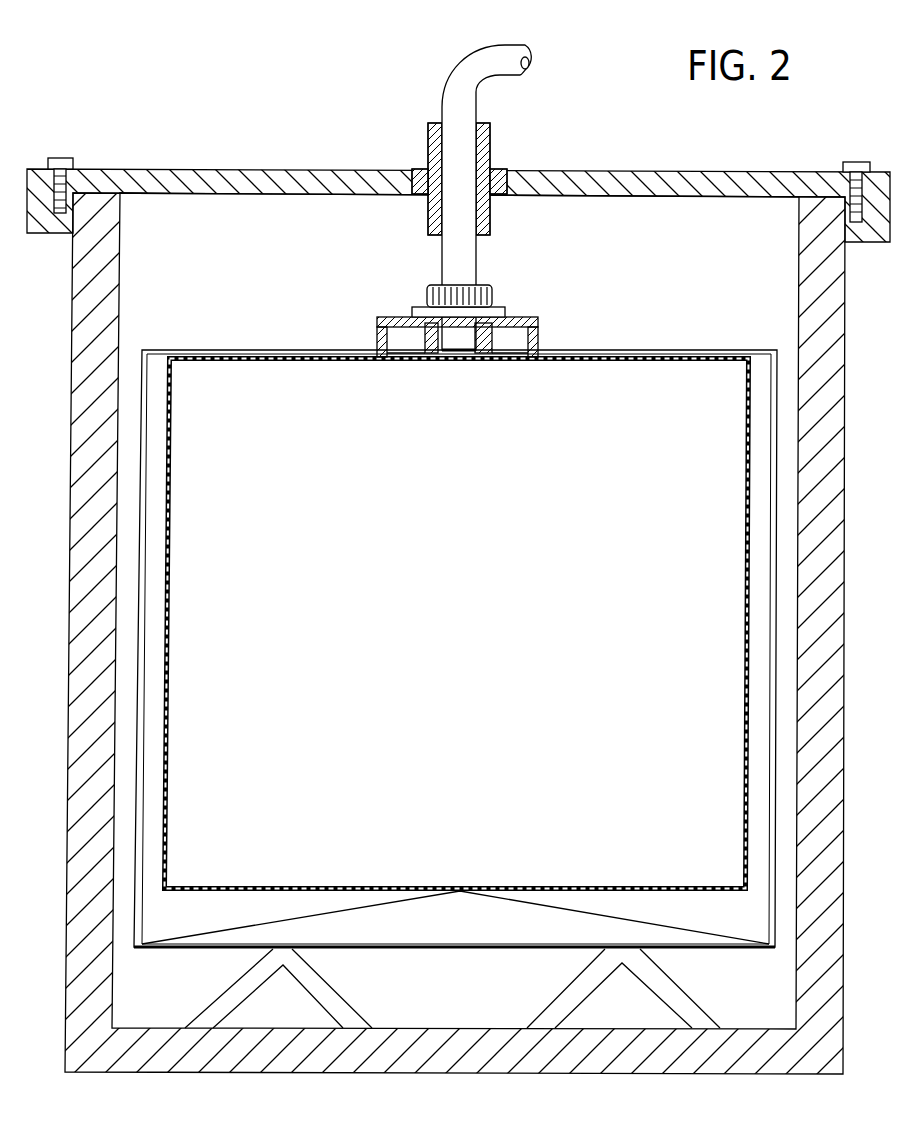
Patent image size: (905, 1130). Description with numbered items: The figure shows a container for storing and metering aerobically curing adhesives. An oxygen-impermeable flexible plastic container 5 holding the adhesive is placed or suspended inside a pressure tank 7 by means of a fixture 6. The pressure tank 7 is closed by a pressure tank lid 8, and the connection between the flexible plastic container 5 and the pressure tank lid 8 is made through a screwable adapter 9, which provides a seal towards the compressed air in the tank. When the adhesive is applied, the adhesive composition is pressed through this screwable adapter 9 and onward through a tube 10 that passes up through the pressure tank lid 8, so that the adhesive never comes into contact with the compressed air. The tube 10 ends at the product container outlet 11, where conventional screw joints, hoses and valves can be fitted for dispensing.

The flexible plastic container 5 is at (170, 514).
The fixture 6 is at (142, 543).
The pressure tank 7 is at (102, 282).
The pressure tank lid 8 is at (283, 183).
The screwable adapter 9 is at (502, 297).
The tube 10 is at (452, 257).
The product container outlet 11 is at (535, 62).